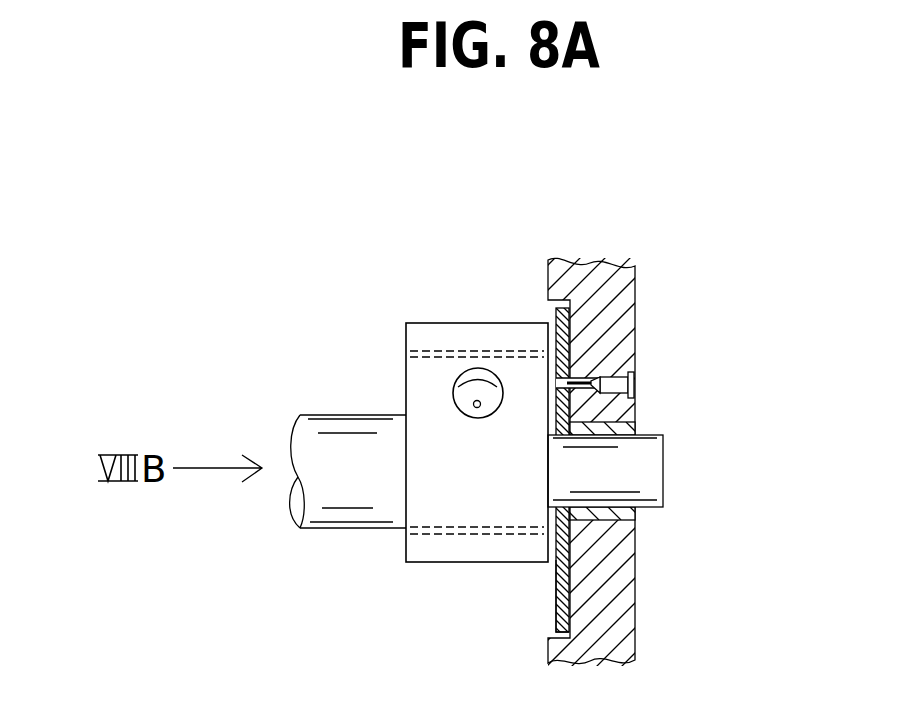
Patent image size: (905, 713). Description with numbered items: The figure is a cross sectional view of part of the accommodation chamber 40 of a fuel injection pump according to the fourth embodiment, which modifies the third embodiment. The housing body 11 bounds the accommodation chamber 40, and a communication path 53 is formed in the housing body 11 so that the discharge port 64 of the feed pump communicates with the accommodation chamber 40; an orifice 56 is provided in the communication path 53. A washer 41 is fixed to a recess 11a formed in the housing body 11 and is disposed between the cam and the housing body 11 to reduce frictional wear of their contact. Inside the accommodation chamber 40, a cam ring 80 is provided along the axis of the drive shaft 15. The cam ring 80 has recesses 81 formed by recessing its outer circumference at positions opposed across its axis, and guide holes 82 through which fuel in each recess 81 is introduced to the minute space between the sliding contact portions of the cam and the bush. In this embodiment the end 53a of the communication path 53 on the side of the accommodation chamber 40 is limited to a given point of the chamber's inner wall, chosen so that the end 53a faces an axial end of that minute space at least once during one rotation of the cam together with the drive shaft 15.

The housing body 11 is at (637, 400).
The recess 11a is at (566, 600).
The drive shaft 15 is at (348, 413).
The accommodation chamber 40 is at (460, 278).
The washer 41 is at (557, 610).
The communication path 53 is at (620, 382).
The end of the communication path 53a is at (556, 390).
The orifice 56 is at (602, 375).
The discharge port 64 is at (635, 373).
The cam ring 80 is at (405, 333).
The recesses 81 is at (452, 390).
The guide holes 82 is at (475, 407).